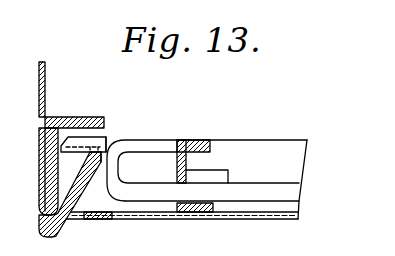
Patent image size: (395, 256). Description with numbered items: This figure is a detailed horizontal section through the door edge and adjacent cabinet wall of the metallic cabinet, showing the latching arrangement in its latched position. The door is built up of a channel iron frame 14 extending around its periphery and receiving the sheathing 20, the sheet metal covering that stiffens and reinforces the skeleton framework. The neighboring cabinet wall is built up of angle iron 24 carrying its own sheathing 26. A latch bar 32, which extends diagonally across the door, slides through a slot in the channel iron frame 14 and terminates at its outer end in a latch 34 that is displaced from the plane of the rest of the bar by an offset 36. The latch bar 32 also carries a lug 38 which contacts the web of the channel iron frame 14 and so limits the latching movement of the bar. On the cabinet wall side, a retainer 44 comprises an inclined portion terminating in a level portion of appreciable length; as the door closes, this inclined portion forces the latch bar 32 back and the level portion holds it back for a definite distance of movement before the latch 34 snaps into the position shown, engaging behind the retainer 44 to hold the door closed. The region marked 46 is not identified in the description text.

The channel iron frame 14 is at (188, 141).
The sheathing 20 is at (164, 219).
The angle iron 24 is at (60, 117).
The sheathing 26 is at (39, 151).
The latch bar 32 is at (250, 188).
The latch 34 is at (80, 143).
The offset 36 is at (118, 150).
The lug 38 is at (207, 172).
The retainer 44 is at (85, 212).
The joint 46 is at (107, 152).